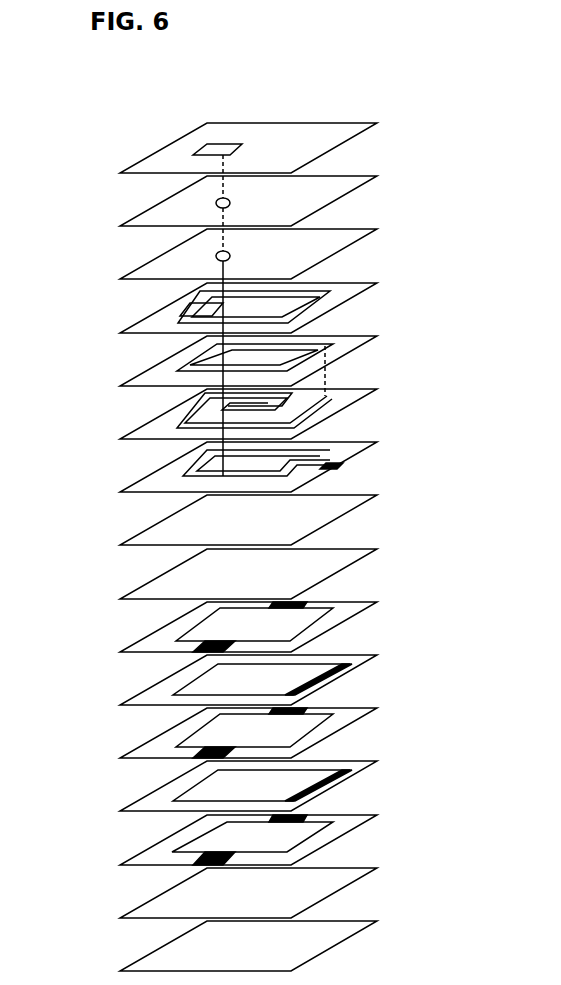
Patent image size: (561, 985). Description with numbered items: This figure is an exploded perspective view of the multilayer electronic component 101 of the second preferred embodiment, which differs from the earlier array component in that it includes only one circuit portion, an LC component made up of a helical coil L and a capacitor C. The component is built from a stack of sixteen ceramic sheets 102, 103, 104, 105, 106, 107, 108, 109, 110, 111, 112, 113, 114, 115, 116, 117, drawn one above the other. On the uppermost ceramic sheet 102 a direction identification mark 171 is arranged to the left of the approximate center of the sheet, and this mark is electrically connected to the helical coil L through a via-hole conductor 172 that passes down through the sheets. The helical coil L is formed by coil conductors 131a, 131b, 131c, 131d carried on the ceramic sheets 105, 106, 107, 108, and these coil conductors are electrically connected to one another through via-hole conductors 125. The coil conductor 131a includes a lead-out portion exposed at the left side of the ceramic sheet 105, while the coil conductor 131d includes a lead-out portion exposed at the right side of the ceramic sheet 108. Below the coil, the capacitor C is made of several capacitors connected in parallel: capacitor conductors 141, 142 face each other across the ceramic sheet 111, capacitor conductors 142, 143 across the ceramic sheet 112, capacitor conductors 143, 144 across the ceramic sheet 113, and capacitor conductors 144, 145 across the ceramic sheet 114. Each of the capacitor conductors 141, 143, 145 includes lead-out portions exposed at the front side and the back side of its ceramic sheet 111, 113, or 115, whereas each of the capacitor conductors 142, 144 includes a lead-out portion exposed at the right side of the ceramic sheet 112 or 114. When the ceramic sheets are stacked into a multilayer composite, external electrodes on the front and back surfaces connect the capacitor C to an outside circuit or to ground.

The multilayer electronic component 101 is at (133, 97).
The ceramic sheet 102 is at (377, 123).
The ceramic sheet 103 is at (377, 176).
The ceramic sheet 104 is at (377, 229).
The ceramic sheet 105 is at (377, 283).
The ceramic sheet 106 is at (377, 336).
The ceramic sheet 107 is at (377, 389).
The ceramic sheet 108 is at (377, 442).
The ceramic sheet 109 is at (377, 495).
The ceramic sheet 110 is at (377, 549).
The ceramic sheet 111 is at (377, 602).
The ceramic sheet 112 is at (377, 655).
The ceramic sheet 113 is at (377, 708).
The ceramic sheet 114 is at (377, 761).
The ceramic sheet 115 is at (377, 815).
The ceramic sheet 116 is at (377, 868).
The ceramic sheet 117 is at (377, 921).
The via-hole conductor 125 is at (180, 326).
The coil conductor 131a is at (320, 299).
The coil conductor 131b is at (313, 366).
The coil conductor 131c is at (320, 408).
The coil conductor 131d is at (343, 465).
The capacitor conductor 141 is at (297, 621).
The capacitor conductor 142 is at (295, 676).
The capacitor conductor 143 is at (297, 727).
The capacitor conductor 144 is at (295, 782).
The capacitor conductor 145 is at (297, 833).
The direction identification mark 171 is at (222, 143).
The via-hole conductor 172 is at (230, 252).
The helical coil L is at (150, 302).
The capacitor C is at (150, 627).